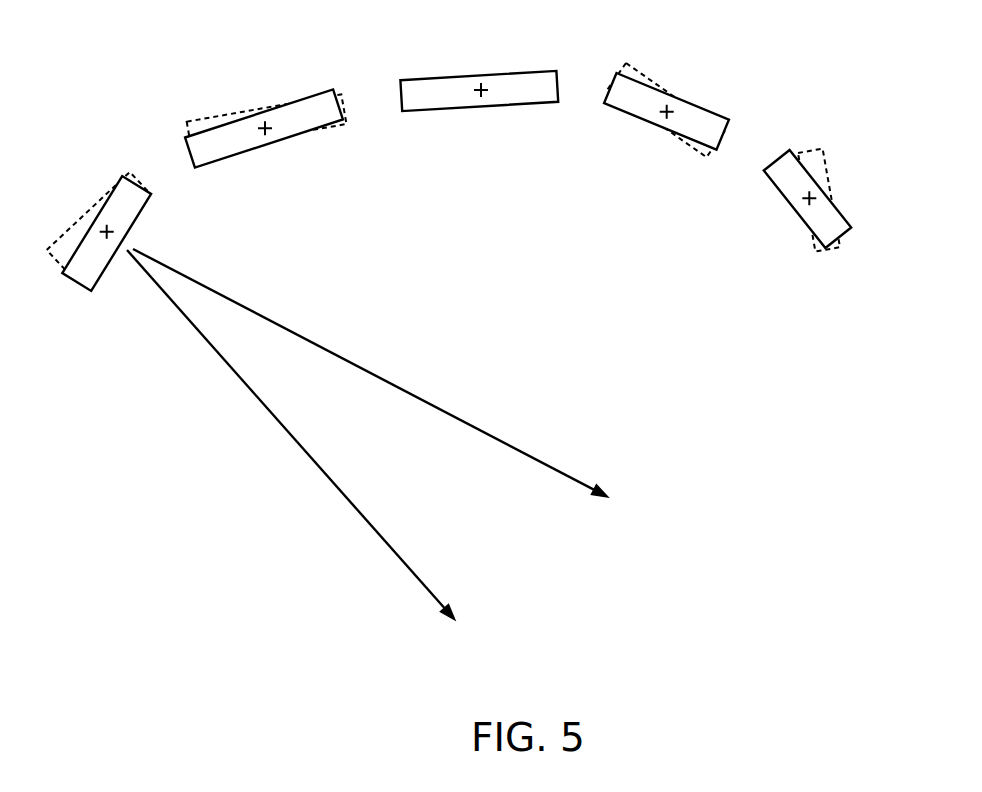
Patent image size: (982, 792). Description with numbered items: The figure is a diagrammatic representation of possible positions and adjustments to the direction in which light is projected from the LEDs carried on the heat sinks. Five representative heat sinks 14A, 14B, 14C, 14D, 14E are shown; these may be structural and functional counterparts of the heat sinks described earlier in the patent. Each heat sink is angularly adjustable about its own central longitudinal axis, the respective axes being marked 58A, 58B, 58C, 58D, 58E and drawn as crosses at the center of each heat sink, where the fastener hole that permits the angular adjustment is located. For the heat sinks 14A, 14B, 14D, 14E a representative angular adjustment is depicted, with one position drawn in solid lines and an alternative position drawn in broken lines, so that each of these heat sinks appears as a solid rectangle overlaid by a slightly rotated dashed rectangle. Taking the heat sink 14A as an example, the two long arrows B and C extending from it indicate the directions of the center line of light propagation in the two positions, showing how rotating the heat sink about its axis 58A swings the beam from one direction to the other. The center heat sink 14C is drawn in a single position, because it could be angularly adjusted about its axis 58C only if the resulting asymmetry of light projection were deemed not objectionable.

The heat sink 14A is at (98, 272).
The heat sink 14B is at (260, 52).
The heat sink 14C is at (502, 72).
The heat sink 14D is at (695, 102).
The heat sink 14E is at (842, 208).
The central longitudinal axis 58A is at (150, 234).
The central longitudinal axis 58B is at (290, 153).
The central longitudinal axis 58C is at (483, 128).
The central longitudinal axis 58D is at (653, 144).
The central longitudinal axis 58E is at (774, 224).
The arrow B is at (368, 523).
The arrow C is at (503, 440).